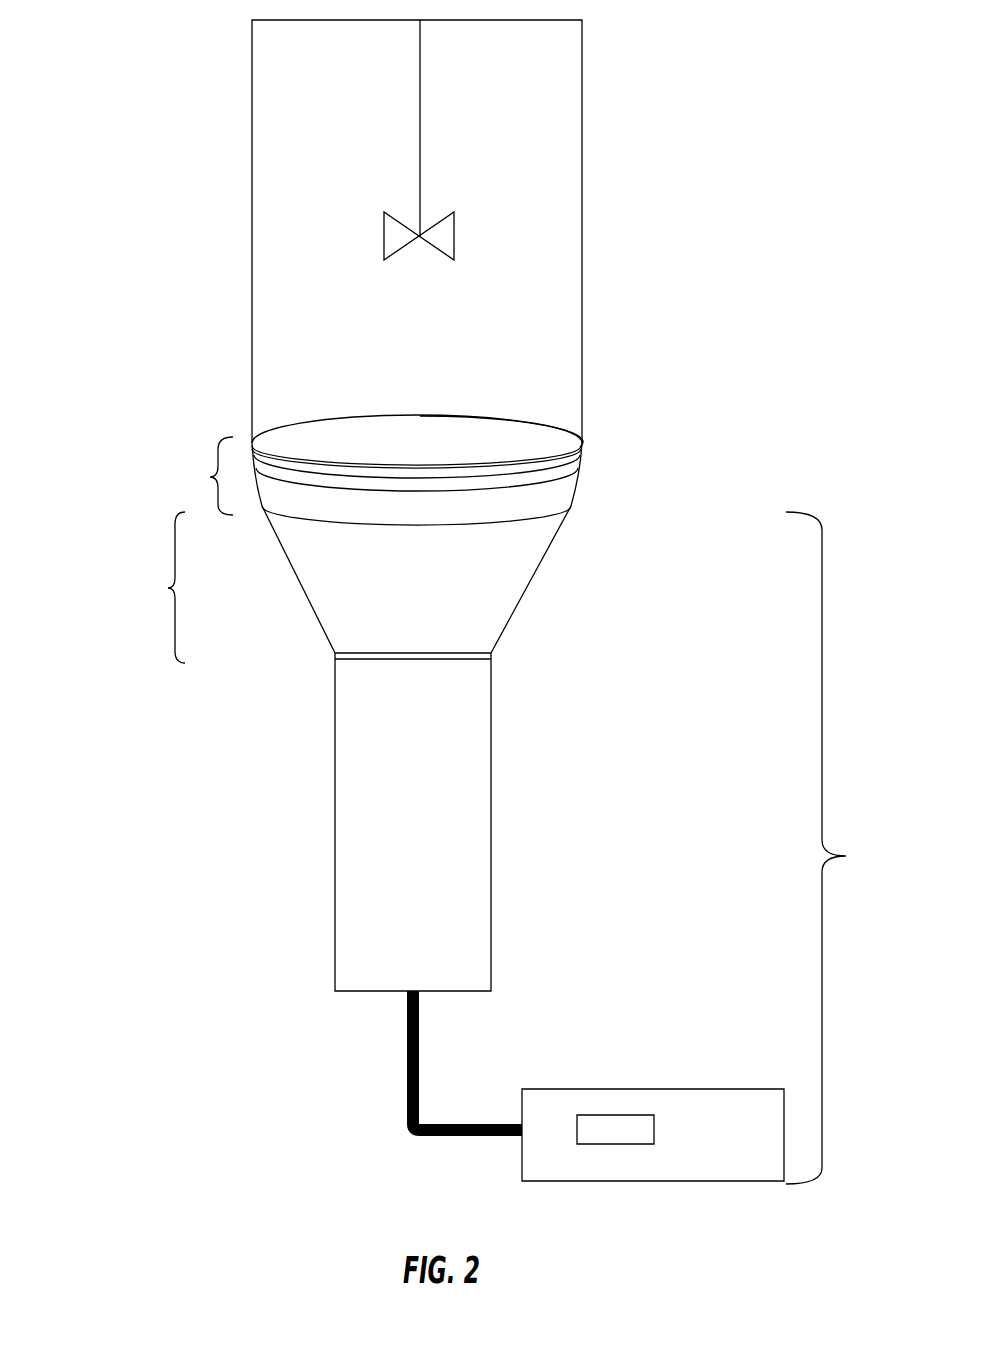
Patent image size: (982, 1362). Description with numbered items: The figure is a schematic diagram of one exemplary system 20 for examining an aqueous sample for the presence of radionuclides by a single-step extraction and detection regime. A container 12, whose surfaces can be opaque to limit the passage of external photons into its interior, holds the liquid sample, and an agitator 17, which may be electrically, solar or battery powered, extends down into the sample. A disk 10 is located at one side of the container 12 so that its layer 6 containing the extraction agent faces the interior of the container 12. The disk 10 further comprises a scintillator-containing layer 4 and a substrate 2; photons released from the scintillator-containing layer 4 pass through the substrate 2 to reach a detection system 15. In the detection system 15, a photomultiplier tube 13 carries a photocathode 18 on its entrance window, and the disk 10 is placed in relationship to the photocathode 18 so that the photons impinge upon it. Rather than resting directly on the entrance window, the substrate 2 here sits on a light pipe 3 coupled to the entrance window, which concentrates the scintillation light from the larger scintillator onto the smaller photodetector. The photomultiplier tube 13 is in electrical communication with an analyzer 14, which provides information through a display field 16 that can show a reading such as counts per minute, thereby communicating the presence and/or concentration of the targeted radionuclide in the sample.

The substrate 2 is at (573, 513).
The light pipe 3 is at (354, 584).
The scintillator-containing layer 4 is at (584, 463).
The layer containing the extraction agent 6 is at (584, 452).
The disk 10 is at (206, 476).
The container 12 is at (290, 212).
The photomultiplier tube 13 is at (429, 779).
The analyzer 14 is at (573, 1089).
The detection system 15 is at (834, 848).
The display field 16 is at (606, 1124).
The agitator 17 is at (419, 188).
The photocathode 18 is at (333, 655).
The system 20 is at (110, 110).